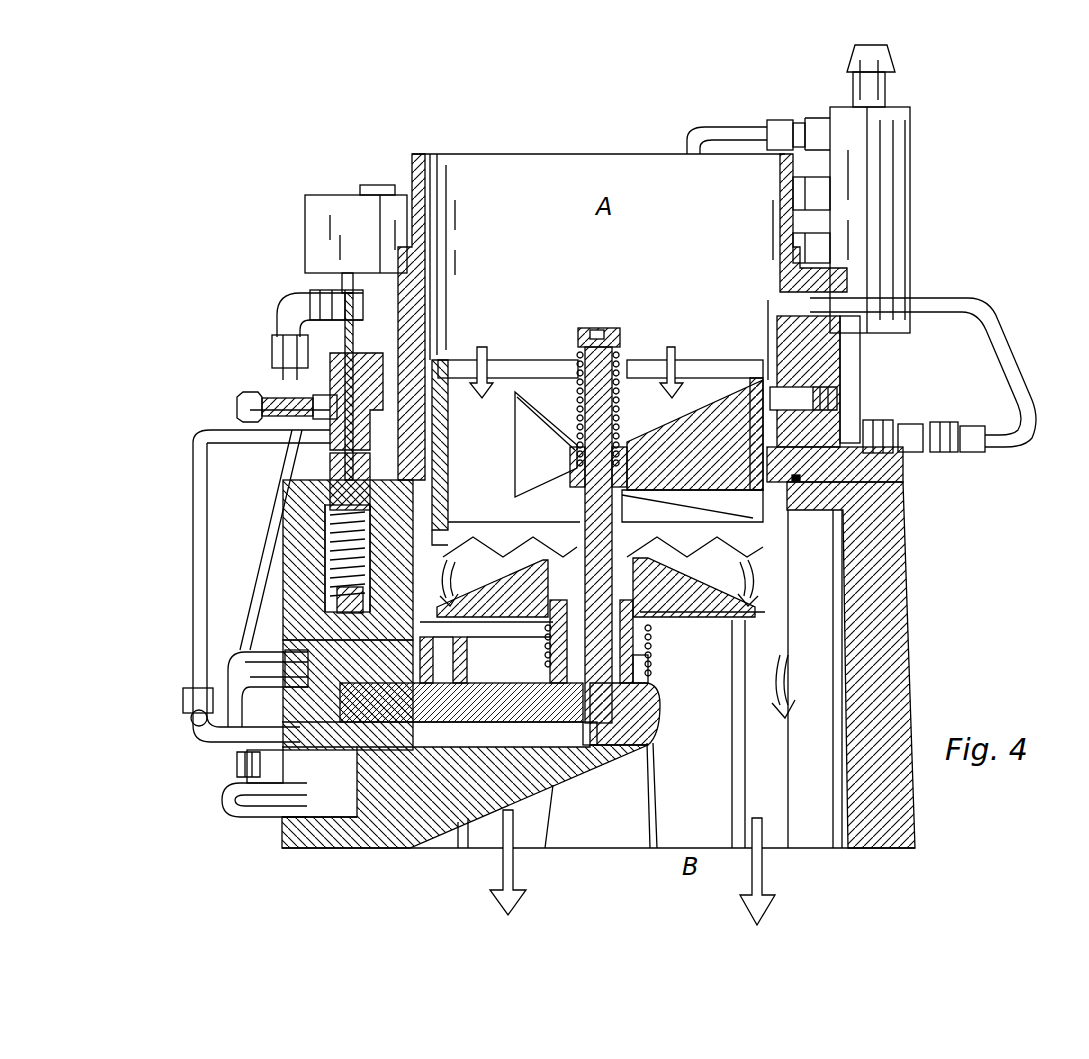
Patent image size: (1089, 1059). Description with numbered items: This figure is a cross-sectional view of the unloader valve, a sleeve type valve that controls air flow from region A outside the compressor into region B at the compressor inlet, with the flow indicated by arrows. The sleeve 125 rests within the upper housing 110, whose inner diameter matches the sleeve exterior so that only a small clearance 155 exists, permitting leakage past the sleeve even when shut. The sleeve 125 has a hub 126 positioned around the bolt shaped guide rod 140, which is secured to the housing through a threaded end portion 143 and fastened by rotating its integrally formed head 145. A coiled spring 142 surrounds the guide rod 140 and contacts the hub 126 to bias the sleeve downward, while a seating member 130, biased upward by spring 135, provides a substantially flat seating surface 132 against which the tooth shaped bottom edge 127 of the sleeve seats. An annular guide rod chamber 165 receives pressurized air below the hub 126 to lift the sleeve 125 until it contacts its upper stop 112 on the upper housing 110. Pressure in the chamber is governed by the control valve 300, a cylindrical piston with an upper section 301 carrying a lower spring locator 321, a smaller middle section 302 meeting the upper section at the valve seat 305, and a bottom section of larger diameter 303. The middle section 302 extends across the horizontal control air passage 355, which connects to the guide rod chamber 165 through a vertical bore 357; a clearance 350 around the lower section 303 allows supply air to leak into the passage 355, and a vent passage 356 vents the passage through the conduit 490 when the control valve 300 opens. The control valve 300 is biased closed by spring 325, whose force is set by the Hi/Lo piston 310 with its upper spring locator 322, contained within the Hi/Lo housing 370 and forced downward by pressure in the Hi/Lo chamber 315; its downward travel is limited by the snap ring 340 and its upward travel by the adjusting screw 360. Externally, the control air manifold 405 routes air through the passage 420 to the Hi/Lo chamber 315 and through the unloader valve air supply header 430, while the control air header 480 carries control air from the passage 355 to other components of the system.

The upper housing 110 is at (900, 472).
The upper stop 112 is at (790, 490).
The sleeve 125 is at (455, 372).
The hub 126 is at (628, 505).
The tooth shaped bottom edge 127 is at (728, 392).
The seating member 130 is at (760, 622).
The seating surface 132 is at (455, 525).
The spring 135 is at (652, 670).
The guide rod 140 is at (615, 400).
The spring 142 is at (612, 400).
The threaded end portion 143 is at (625, 735).
The head 145 is at (583, 328).
The clearance 155 is at (800, 375).
The guide rod chamber 165 is at (625, 632).
The control valve 300 is at (335, 632).
The upper section 301 is at (422, 662).
The middle section 302 is at (292, 820).
The lower section of larger diameter 303 is at (365, 758).
The valve seat 305 is at (420, 702).
The Hi/Lo piston 310 is at (440, 420).
The Hi/Lo chamber 315 is at (340, 395).
The lower spring locator 321 is at (335, 600).
The upper spring locator 322 is at (335, 505).
The spring 325 is at (333, 550).
The snap ring 340 is at (440, 456).
The clearance 350 is at (365, 792).
The control air passage 355 is at (462, 749).
The vent passage 356 is at (243, 748).
The vertical bore 357 is at (580, 728).
The adjusting screw 360 is at (355, 333).
The Hi/Lo housing 370 is at (340, 342).
The control air manifold 405 is at (898, 168).
The passage 420 is at (245, 412).
The unloader valve air supply header 430 is at (258, 815).
The control air header 480 is at (200, 572).
The unloader vent passage 490 is at (300, 465).